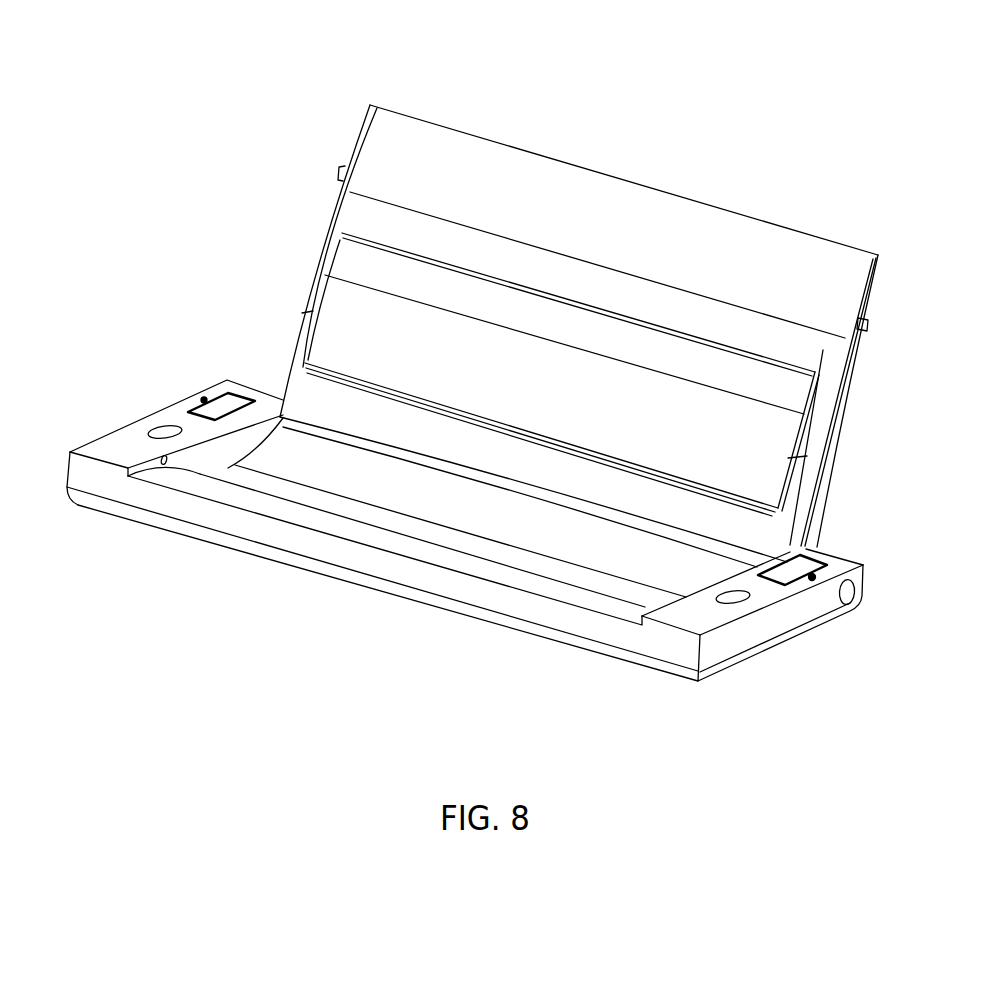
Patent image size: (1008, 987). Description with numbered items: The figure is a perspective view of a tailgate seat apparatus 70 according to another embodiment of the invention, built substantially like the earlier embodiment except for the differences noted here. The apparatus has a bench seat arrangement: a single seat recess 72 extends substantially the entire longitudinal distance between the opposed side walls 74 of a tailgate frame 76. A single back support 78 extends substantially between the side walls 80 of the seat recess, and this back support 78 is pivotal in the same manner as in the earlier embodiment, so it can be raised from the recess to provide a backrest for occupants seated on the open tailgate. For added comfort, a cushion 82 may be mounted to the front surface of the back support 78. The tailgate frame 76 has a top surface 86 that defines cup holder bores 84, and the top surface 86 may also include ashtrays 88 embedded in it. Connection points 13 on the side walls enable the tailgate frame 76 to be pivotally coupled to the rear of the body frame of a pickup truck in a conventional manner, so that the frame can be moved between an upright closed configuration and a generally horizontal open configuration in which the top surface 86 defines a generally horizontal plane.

The tailgate seat apparatus 70 is at (490, 68).
The seat recess 72 is at (272, 490).
The side walls 74 is at (720, 657).
The tailgate frame 76 is at (110, 388).
The back support 78 is at (685, 185).
The side walls of the seat recess 80 is at (240, 457).
The cushion 82 is at (537, 392).
The cup holder bores 84 is at (162, 424).
The top surface 86 is at (90, 443).
The ashtrays 88 is at (225, 392).
The connection points 13 is at (858, 590).